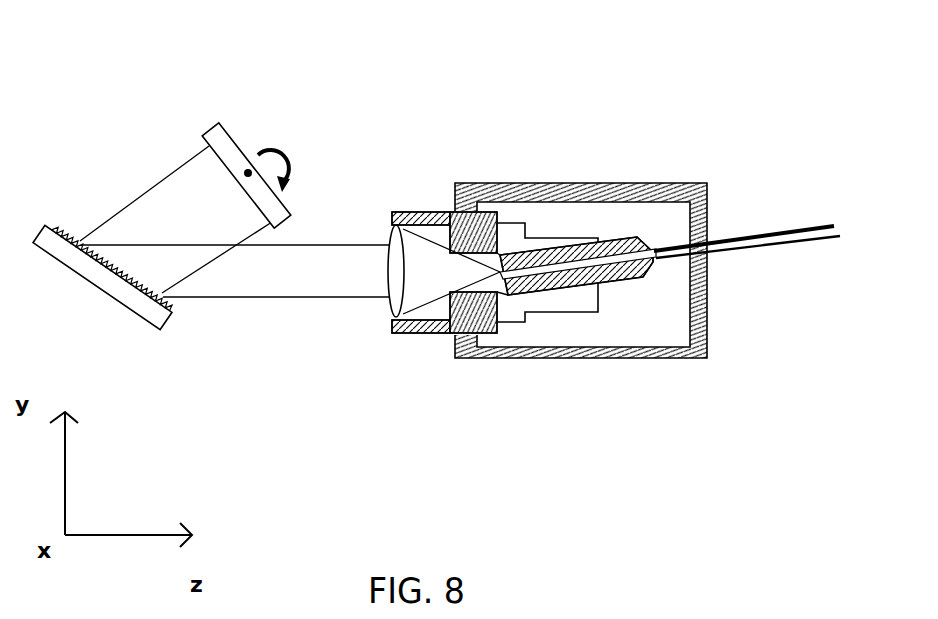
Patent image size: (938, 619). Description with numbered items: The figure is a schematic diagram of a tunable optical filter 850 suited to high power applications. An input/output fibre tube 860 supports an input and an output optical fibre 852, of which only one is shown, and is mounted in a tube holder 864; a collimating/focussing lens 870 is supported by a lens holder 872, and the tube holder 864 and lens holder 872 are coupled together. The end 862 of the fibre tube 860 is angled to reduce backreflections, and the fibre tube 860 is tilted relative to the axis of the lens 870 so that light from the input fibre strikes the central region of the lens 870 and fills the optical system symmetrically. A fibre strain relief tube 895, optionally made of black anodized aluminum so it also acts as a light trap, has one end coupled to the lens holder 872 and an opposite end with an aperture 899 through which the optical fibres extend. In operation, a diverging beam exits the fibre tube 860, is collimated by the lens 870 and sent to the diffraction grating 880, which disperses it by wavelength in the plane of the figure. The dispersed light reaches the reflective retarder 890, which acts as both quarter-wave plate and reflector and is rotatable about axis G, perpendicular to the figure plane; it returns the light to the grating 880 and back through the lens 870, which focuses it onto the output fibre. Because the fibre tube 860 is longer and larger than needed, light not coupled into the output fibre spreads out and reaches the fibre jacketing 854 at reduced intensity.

The optical filter 850 is at (465, 58).
The optical fibre 852 is at (747, 233).
The fibre jacketing 854 is at (790, 242).
The input/output fibre tube 860 is at (613, 282).
The end of the fibre tube 862 is at (507, 293).
The tube holder 864 is at (562, 307).
The collimating/focussing lens 870 is at (390, 308).
The lens holder 872 is at (430, 333).
The diffraction grating 880 is at (163, 323).
The reflective retarder 890 is at (205, 130).
The fibre strain relief tube 895 is at (557, 181).
The aperture 899 is at (707, 255).
The axis G is at (248, 168).